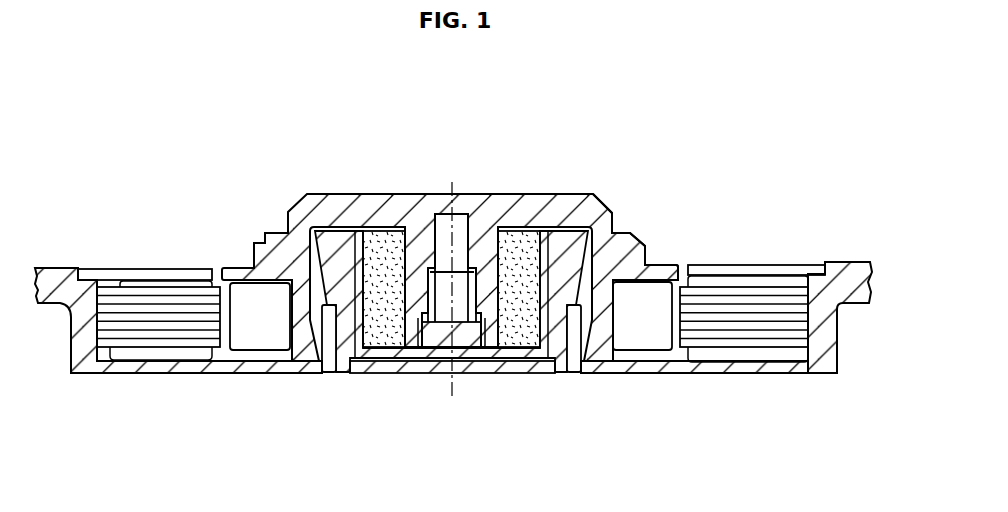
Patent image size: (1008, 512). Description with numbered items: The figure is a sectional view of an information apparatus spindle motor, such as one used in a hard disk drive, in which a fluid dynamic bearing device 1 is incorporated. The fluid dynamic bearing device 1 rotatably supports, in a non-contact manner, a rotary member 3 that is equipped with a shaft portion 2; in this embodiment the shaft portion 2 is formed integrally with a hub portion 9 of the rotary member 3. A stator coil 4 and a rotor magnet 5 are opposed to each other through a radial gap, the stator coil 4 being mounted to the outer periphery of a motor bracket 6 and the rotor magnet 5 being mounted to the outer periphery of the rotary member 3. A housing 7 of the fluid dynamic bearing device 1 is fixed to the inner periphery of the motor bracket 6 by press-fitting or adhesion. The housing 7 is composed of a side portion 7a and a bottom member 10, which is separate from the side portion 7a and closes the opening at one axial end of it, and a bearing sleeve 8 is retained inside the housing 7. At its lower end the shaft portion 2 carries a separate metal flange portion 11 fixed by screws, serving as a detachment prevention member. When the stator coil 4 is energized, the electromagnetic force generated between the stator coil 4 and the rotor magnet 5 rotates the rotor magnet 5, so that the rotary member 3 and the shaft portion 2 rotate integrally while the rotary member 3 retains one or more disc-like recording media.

The fluid dynamic bearing device 1 is at (551, 172).
The shaft portion 2 is at (510, 243).
The rotary member 3 is at (354, 190).
The stator coil 4 is at (786, 284).
The rotor magnet 5 is at (654, 290).
The motor bracket 6 is at (153, 368).
The housing 7 is at (489, 384).
The side portion 7a is at (316, 356).
The bearing sleeve 8 is at (382, 243).
The hub portion 9 is at (569, 195).
The bottom member 10 is at (412, 372).
The flange portion 11 is at (528, 356).